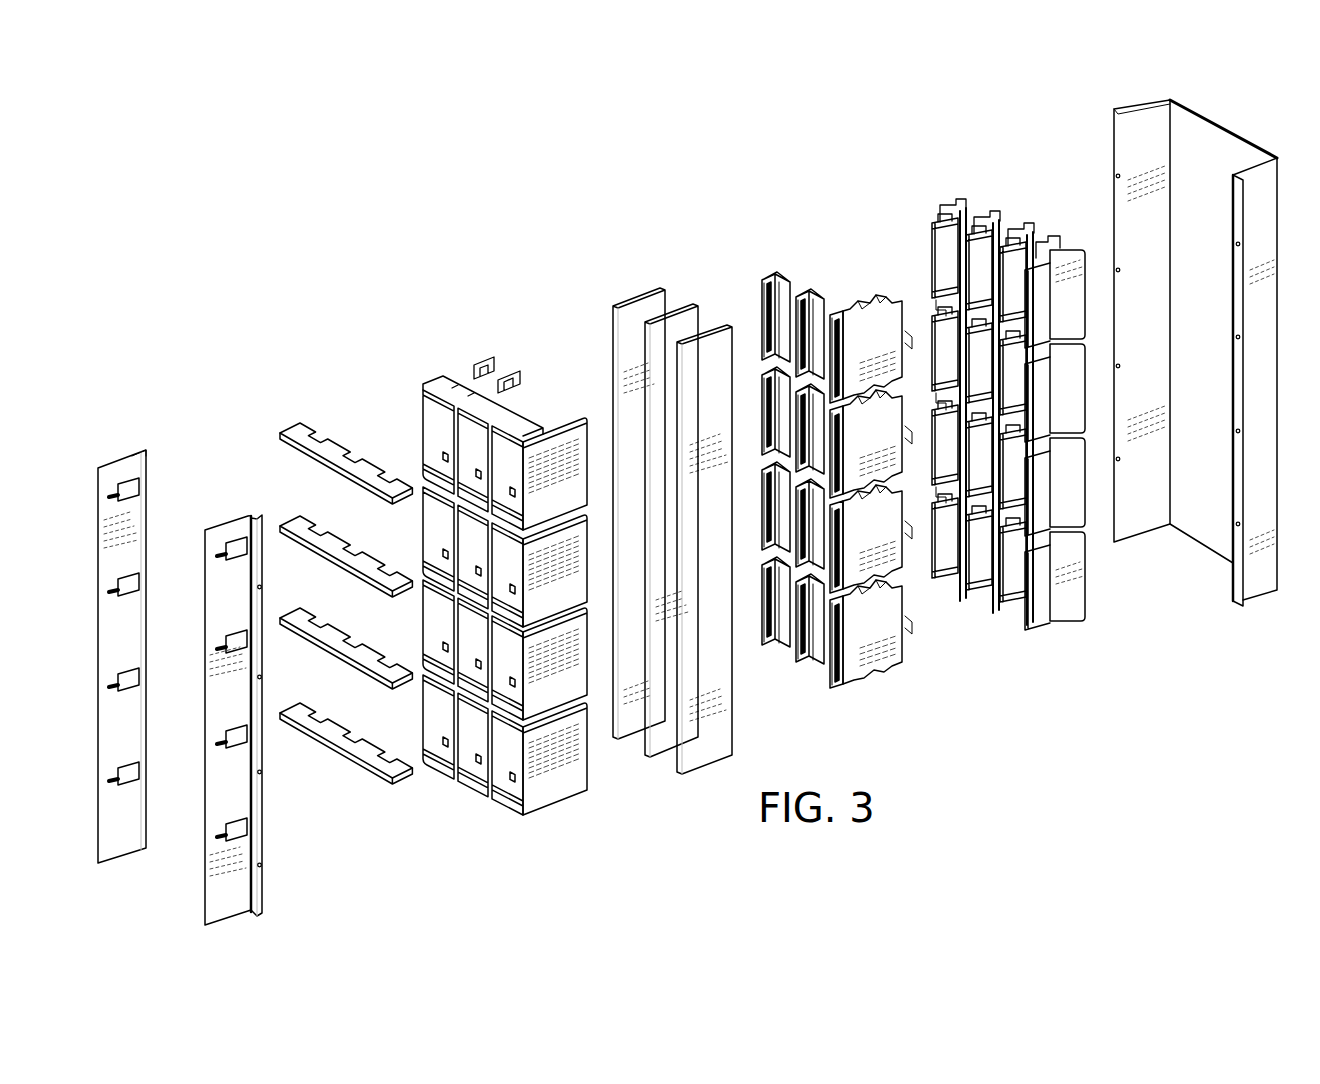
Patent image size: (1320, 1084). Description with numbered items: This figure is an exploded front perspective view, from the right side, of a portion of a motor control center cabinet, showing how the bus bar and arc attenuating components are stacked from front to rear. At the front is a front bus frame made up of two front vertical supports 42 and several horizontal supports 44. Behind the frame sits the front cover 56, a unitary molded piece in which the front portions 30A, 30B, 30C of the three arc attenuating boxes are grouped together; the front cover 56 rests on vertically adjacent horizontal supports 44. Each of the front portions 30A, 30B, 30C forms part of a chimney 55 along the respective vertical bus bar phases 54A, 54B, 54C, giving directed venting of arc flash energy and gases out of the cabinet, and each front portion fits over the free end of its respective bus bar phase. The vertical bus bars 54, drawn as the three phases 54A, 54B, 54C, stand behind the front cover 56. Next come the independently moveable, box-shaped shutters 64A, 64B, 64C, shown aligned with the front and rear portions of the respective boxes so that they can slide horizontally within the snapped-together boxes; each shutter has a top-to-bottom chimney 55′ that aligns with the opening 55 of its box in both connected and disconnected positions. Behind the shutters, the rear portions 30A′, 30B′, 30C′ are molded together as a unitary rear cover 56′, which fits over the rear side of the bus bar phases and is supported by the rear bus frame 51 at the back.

The front vertical support 42 is at (149, 449).
The horizontal support 44 is at (286, 444).
The front portion of arc attenuating box A 30A is at (423, 451).
The front portion of arc attenuating box B 30B is at (461, 439).
The front portion of arc attenuating box C 30C is at (500, 441).
The front cover 56 is at (589, 449).
The vertical bus bar phase 54A is at (619, 344).
The vertical bus bar phase 54B is at (683, 316).
The vertical bus bar phase 54C is at (729, 331).
The bus bars 54 is at (741, 725).
The box-shaped shutter 64A is at (787, 279).
The box-shaped shutter 64B is at (852, 294).
The box-shaped shutter 64C is at (884, 301).
The chimney of box-shaped shutter 55′ is at (864, 329).
The rear portion of arc attenuating box A 30A′ is at (951, 206).
The rear portion of arc attenuating box B 30B′ is at (994, 215).
The rear portion of arc attenuating box C 30C′ is at (1030, 230).
The chimney 55 is at (1052, 238).
The rear cover 56′ is at (1090, 295).
The rear bus frame 51 is at (1243, 122).